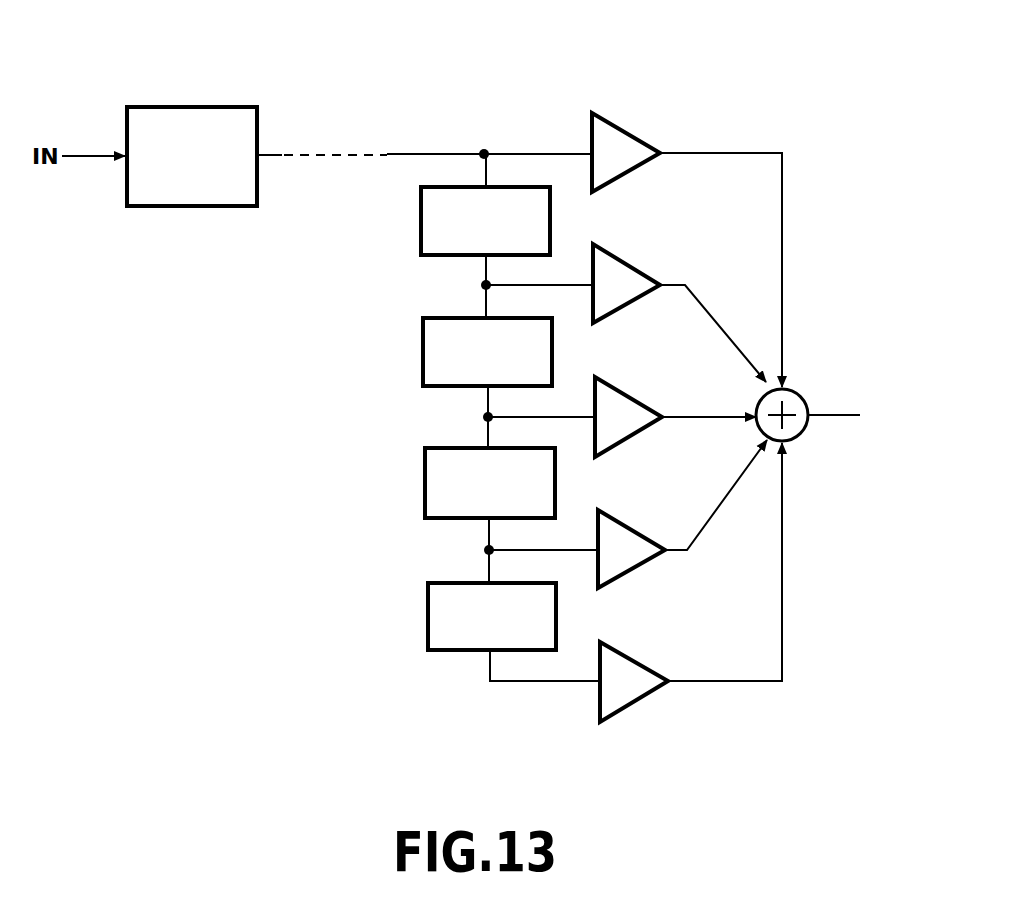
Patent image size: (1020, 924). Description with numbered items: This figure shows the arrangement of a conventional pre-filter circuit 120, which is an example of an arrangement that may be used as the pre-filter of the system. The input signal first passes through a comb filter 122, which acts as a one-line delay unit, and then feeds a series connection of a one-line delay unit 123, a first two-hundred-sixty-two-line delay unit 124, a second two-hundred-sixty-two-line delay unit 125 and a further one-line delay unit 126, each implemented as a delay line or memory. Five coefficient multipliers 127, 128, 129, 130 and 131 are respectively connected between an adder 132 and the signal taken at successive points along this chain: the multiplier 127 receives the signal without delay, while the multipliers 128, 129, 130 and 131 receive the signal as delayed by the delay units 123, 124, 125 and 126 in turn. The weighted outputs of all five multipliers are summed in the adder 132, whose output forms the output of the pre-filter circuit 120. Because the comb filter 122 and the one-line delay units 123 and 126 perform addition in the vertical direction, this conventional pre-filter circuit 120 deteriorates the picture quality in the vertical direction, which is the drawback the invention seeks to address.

The pre-filter circuit 120 is at (402, 118).
The comb filter 122 is at (194, 107).
The 1H delay unit (1HDL) 123 is at (421, 211).
The 262H delay unit (262H memory) 124 is at (423, 350).
The 262H delay unit (262H memory) 125 is at (425, 480).
The 1H delay unit (1HDL) 126 is at (428, 615).
The coefficient multiplier 127 is at (620, 138).
The coefficient multiplier 128 is at (622, 272).
The coefficient multiplier 129 is at (624, 402).
The coefficient multiplier 130 is at (620, 527).
The coefficient multiplier 131 is at (632, 660).
The adder 132 is at (797, 396).